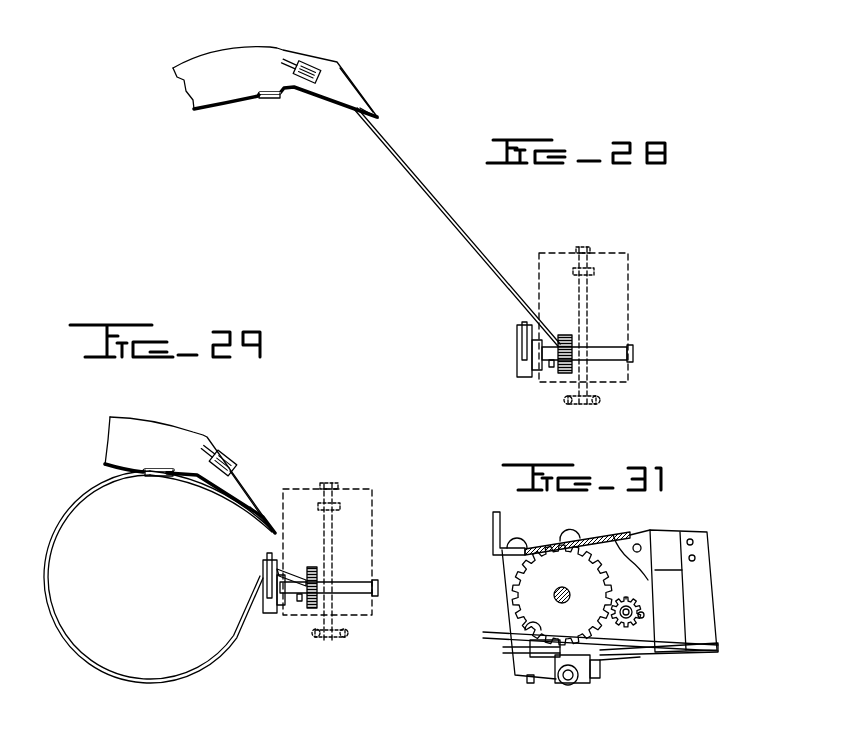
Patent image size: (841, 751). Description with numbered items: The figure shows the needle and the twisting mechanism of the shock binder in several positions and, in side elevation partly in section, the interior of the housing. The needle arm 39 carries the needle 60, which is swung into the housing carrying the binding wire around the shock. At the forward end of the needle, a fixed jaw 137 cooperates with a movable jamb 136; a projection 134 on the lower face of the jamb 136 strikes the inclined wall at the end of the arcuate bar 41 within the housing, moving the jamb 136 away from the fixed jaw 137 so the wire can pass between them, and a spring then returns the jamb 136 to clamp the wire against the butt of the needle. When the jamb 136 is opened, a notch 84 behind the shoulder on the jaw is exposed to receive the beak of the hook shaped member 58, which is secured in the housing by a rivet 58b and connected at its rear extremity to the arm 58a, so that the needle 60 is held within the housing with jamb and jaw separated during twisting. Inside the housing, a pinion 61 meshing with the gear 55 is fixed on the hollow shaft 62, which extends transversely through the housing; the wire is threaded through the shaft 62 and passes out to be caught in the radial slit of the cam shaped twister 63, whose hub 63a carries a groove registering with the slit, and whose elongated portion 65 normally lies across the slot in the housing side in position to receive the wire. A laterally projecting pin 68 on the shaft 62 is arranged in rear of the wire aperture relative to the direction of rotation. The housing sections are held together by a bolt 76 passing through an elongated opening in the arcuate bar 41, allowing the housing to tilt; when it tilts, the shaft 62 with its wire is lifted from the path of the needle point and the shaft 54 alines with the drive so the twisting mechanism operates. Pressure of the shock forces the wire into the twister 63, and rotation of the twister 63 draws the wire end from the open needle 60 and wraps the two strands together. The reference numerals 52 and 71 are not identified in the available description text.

In FIG. 28, the needle arm 39 is at (201, 108).
In FIG. 29, the needle arm 39 is at (115, 457).
In FIG. 31, the arcuate bar 41 is at (656, 648).
In FIG. 28, the housing 52 is at (605, 267).
In FIG. 29, the housing 52 is at (348, 497).
In FIG. 31, the housing 52 is at (505, 572).
In FIG. 31, the shaft 54 is at (556, 597).
In FIG. 31, the gear 55 is at (530, 585).
In FIG. 31, the hook shaped member 58 is at (668, 558).
In FIG. 31, the arm 58a is at (716, 643).
In FIG. 31, the rivet 58b is at (640, 547).
In FIG. 28, the needle 60 is at (257, 77).
In FIG. 29, the needle 60 is at (145, 455).
In FIG. 31, the needle 60 is at (578, 643).
In FIG. 28, the pinion 61 is at (570, 335).
In FIG. 29, the pinion 61 is at (312, 568).
In FIG. 31, the pinion 61 is at (640, 598).
In FIG. 28, the shaft 62 is at (610, 347).
In FIG. 29, the shaft 62 is at (355, 585).
In FIG. 31, the shaft 62 is at (641, 611).
In FIG. 28, the twister 63 is at (522, 345).
In FIG. 29, the twister 63 is at (262, 576).
In FIG. 29, the hub 63a is at (285, 572).
In FIG. 28, the elongated portion 65 is at (522, 374).
In FIG. 29, the elongated portion 65 is at (268, 613).
In FIG. 28, the pin 68 is at (552, 367).
In FIG. 29, the pin 68 is at (300, 601).
In FIG. 31, the pin 68 is at (645, 617).
In FIG. 31, the angle bracket 71 is at (492, 523).
In FIG. 31, the bolt 76 is at (568, 540).
In FIG. 28, the notch 84 is at (278, 47).
In FIG. 29, the notch 84 is at (205, 436).
In FIG. 31, the projection 134 is at (540, 655).
In FIG. 31, the jamb 136 is at (610, 655).
In FIG. 28, the fixed jaw 137 is at (337, 88).
In FIG. 29, the fixed jaw 137 is at (250, 507).